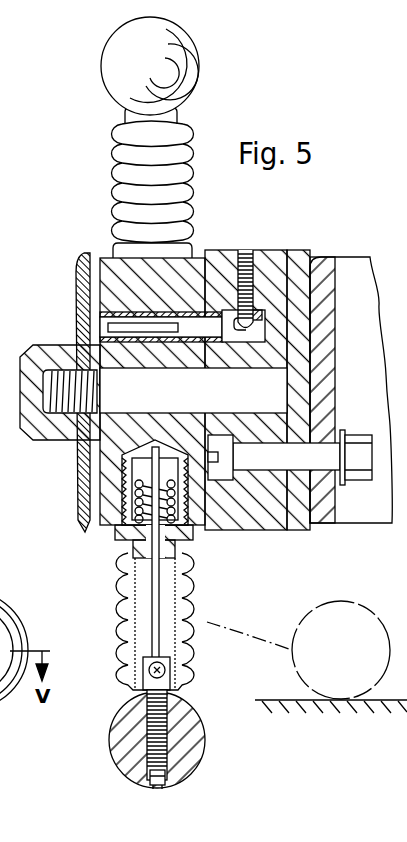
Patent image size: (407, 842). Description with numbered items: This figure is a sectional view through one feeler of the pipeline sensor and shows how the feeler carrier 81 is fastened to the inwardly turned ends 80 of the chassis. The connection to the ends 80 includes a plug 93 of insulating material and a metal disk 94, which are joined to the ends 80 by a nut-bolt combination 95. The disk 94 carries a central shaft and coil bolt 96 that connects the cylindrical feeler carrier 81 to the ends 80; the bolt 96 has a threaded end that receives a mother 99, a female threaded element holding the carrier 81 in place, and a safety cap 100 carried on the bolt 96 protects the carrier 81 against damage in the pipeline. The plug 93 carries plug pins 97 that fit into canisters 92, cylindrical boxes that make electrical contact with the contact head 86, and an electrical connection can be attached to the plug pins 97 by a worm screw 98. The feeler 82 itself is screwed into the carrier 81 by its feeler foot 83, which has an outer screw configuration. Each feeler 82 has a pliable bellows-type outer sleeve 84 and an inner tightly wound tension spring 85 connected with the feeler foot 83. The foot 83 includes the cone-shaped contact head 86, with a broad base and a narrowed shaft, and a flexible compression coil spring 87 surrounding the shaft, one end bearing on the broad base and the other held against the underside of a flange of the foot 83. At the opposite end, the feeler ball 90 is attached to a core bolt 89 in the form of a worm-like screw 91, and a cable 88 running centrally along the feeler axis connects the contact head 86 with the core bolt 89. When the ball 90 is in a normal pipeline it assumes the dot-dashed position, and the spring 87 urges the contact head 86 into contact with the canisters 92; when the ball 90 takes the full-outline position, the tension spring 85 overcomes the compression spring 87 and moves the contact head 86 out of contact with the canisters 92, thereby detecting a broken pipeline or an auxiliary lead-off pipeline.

The inwardly turned ends 80 is at (322, 297).
The feeler carrier 81 is at (117, 272).
The feeler 82 is at (205, 613).
The feeler foot 83 is at (115, 533).
The outer sleeve 84 is at (117, 628).
The tension spring 85 is at (118, 605).
The contact head 86 is at (133, 477).
The compression coil spring 87 is at (135, 498).
The cable 88 is at (153, 585).
The core bolt 89 is at (153, 708).
The feeler ball 90 is at (147, 770).
The worm-like screw 91 is at (148, 762).
The canisters 92 is at (122, 343).
The plug 93 is at (267, 262).
The metal disk 94 is at (298, 292).
The nut-bolt combination 95 is at (277, 458).
The coil bolt 96 is at (200, 402).
The plug pins 97 is at (108, 335).
The worm screw 98 is at (243, 253).
The mother 99 is at (49, 433).
The safety cap 100 is at (76, 282).